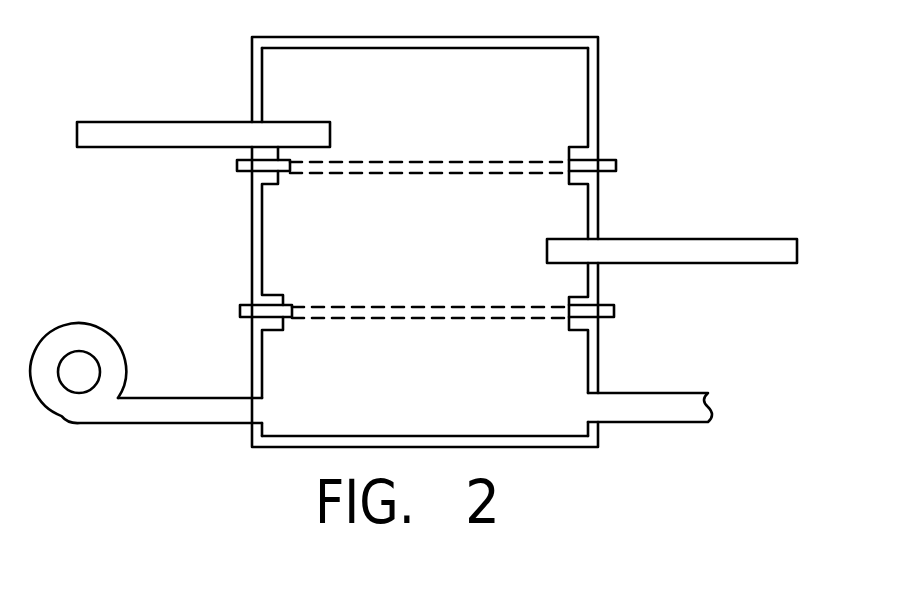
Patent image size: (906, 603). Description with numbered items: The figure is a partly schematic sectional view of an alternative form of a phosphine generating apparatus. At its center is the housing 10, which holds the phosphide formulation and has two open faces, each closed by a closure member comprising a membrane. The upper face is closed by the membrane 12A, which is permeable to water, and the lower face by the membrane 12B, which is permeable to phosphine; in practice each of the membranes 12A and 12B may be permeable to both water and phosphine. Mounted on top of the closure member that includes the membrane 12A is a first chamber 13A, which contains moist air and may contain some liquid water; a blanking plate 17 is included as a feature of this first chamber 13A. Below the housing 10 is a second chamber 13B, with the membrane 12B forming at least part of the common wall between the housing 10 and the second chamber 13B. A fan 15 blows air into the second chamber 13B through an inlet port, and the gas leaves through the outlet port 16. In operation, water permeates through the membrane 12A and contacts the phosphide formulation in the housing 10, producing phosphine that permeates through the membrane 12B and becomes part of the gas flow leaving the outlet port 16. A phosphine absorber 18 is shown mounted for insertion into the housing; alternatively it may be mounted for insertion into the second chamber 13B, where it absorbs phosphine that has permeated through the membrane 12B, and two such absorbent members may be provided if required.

The housing 10 is at (254, 238).
The membrane 12A is at (548, 160).
The membrane 12B is at (528, 322).
The first chamber 13A is at (566, 78).
The second chamber 13B is at (298, 378).
The fan 15 is at (95, 343).
The outlet port 16 is at (677, 408).
The blanking plate 17 is at (142, 134).
The phosphine absorber 18 is at (693, 250).